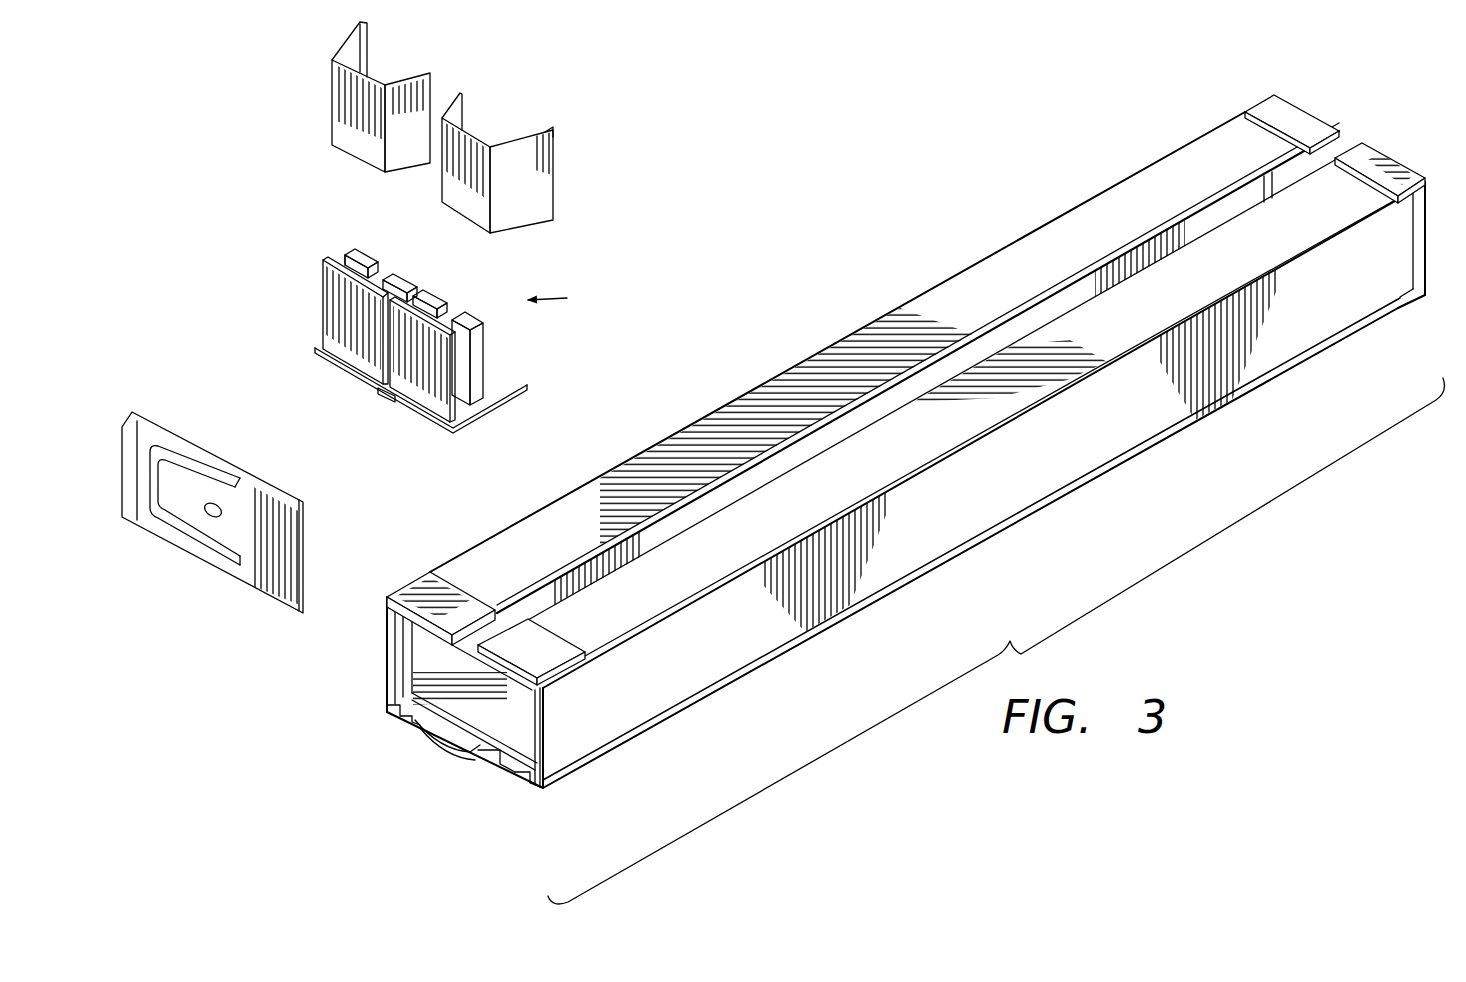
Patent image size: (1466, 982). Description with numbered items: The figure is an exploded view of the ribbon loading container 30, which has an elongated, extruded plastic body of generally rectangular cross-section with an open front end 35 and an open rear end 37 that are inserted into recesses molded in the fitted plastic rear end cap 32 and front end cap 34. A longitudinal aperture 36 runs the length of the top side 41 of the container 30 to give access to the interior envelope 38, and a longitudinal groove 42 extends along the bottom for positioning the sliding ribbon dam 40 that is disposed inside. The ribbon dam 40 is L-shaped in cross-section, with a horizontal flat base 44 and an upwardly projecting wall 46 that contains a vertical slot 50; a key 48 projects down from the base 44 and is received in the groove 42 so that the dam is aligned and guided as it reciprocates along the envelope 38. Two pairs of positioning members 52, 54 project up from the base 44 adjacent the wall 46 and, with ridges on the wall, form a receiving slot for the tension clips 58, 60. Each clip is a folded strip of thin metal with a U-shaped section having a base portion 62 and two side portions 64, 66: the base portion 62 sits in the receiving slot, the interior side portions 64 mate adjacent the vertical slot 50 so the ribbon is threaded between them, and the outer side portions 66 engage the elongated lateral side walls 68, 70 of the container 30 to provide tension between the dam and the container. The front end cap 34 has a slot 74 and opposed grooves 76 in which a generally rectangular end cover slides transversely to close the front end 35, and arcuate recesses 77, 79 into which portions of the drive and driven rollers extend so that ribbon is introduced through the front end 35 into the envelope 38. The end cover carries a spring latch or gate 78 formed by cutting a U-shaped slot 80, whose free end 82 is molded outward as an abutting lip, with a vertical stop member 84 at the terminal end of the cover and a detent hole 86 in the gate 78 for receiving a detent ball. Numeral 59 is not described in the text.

The ribbon loading container 30 is at (885, 457).
The rear end cap 32 is at (1398, 177).
The front end cap 34 is at (550, 647).
The front end 35 is at (430, 660).
The longitudinal aperture 36 is at (737, 481).
The rear end 37 is at (1340, 143).
The interior envelope 38 is at (688, 514).
The ribbon dam 40 is at (569, 298).
The top side 41 is at (493, 547).
The longitudinal groove 42 is at (487, 727).
The base 44 is at (408, 329).
The wall 46 is at (333, 312).
The key 48 is at (383, 397).
The vertical slot 50 is at (383, 348).
The positioning members 52 is at (436, 318).
The positioning members 54 is at (440, 318).
The tension clip 58 is at (363, 93).
The tab 59 is at (363, 247).
The tension clip 60 is at (460, 173).
The base portion 62 is at (373, 75).
The interior side portion 64 is at (408, 82).
The outer side portion 66 is at (347, 43).
The lateral side wall 68 is at (1123, 442).
The lateral side wall 70 is at (972, 283).
The slot 74 is at (385, 648).
The opposed grooves 76 is at (500, 763).
The arcuate recess 77 is at (408, 717).
The spring latch or gate 78 is at (190, 520).
The arcuate recess 79 is at (523, 783).
The U-shaped slot 80 is at (230, 563).
The free end 82 is at (165, 523).
The vertical stop member 84 is at (180, 523).
The detent hole 86 is at (217, 503).